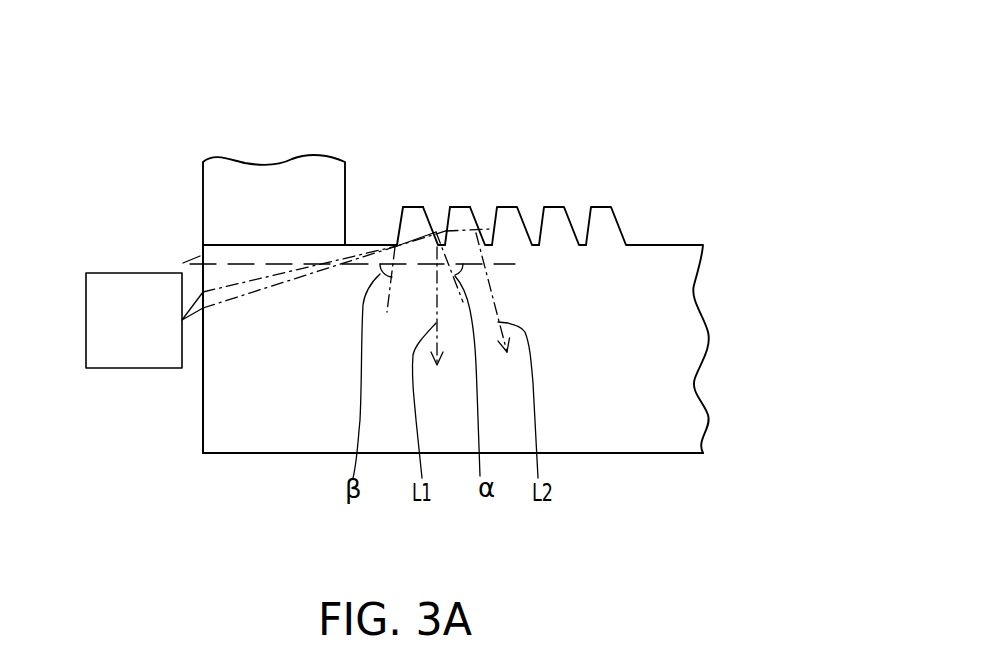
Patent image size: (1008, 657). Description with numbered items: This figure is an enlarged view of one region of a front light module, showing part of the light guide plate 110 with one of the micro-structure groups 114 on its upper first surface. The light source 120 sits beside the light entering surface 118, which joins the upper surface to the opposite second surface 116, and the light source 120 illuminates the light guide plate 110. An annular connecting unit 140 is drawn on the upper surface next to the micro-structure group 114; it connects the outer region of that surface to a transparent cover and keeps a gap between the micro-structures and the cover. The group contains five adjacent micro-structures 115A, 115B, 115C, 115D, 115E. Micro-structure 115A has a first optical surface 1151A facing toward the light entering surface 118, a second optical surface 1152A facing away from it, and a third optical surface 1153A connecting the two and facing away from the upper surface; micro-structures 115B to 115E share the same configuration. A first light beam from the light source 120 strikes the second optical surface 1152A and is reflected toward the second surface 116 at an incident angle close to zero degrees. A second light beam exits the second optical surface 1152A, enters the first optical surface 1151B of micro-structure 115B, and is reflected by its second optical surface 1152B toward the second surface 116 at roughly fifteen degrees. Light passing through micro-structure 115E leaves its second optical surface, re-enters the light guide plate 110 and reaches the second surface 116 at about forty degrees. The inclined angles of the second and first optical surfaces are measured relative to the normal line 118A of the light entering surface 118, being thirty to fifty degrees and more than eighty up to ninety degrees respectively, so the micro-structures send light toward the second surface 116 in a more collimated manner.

The light guide plate 110 is at (668, 395).
The micro-structure groups 114 is at (523, 127).
The micro-structure 115A is at (397, 136).
The micro-structure 115B is at (538, 127).
The micro-structure 115C is at (512, 223).
The micro-structure 115D is at (565, 229).
The micro-structure 115E is at (610, 228).
The first optical surface 1151A is at (400, 222).
The second optical surface 1152A is at (433, 202).
The third optical surface 1153A is at (413, 207).
The first optical surface 1151B is at (449, 216).
The second optical surface 1152B is at (483, 213).
The second surface 116 is at (295, 455).
The light entering surface 118 is at (203, 248).
The normal line 118A is at (170, 247).
The light source 120 is at (133, 350).
The annular connecting unit 140 is at (281, 193).